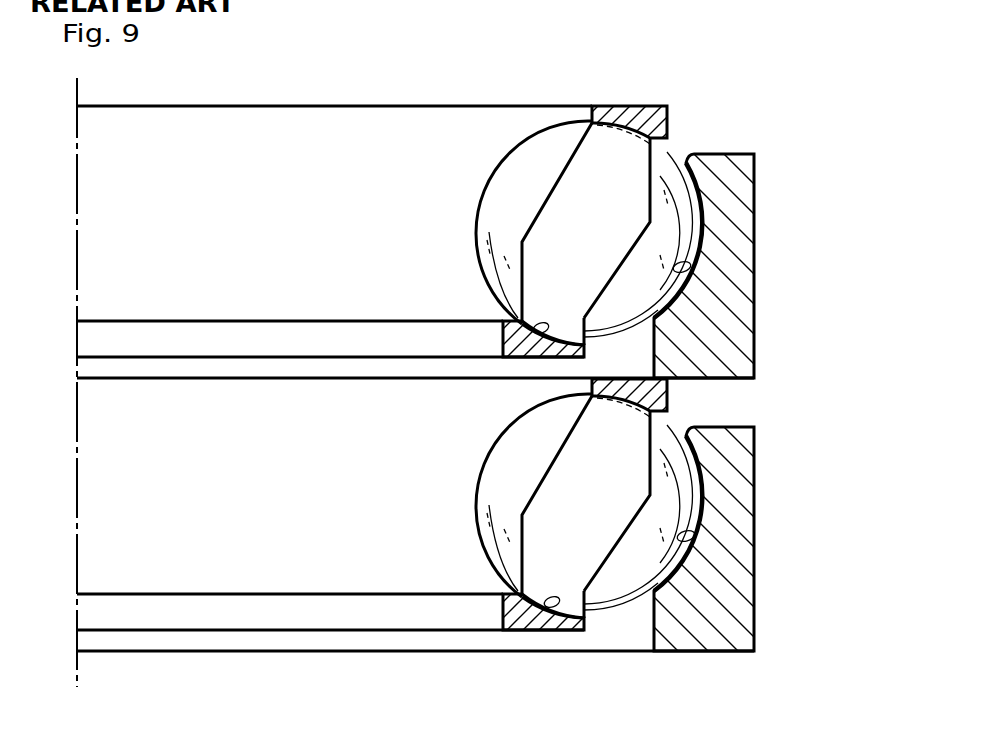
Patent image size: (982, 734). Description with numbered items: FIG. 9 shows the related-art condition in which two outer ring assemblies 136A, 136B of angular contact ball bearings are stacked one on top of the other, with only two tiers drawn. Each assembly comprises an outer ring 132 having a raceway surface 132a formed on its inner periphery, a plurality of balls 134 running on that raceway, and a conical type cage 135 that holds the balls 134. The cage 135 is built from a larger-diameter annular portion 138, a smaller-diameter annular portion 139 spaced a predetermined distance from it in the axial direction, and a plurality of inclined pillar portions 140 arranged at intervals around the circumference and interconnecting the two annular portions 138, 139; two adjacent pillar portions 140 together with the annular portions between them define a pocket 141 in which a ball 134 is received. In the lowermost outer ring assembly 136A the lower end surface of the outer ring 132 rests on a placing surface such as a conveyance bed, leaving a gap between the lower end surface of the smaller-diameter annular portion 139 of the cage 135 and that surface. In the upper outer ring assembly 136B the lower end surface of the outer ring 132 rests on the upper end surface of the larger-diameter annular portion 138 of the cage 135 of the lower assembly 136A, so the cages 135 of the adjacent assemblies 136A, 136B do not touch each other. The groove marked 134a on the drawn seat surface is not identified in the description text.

The outer ring 132 is at (755, 318).
The raceway surface 132a is at (690, 272).
The ball 134 is at (683, 230).
The groove of spherical seat 134a is at (690, 538).
The conical type cage 135 is at (571, 163).
The lowermost outer ring assembly 136A is at (756, 452).
The upper outer ring assembly 136B is at (756, 174).
The larger-diameter annular portion 138 is at (668, 114).
The smaller-diameter annular portion 139 is at (517, 322).
The inclined pillar portion 140 is at (543, 232).
The pocket 141 is at (528, 320).